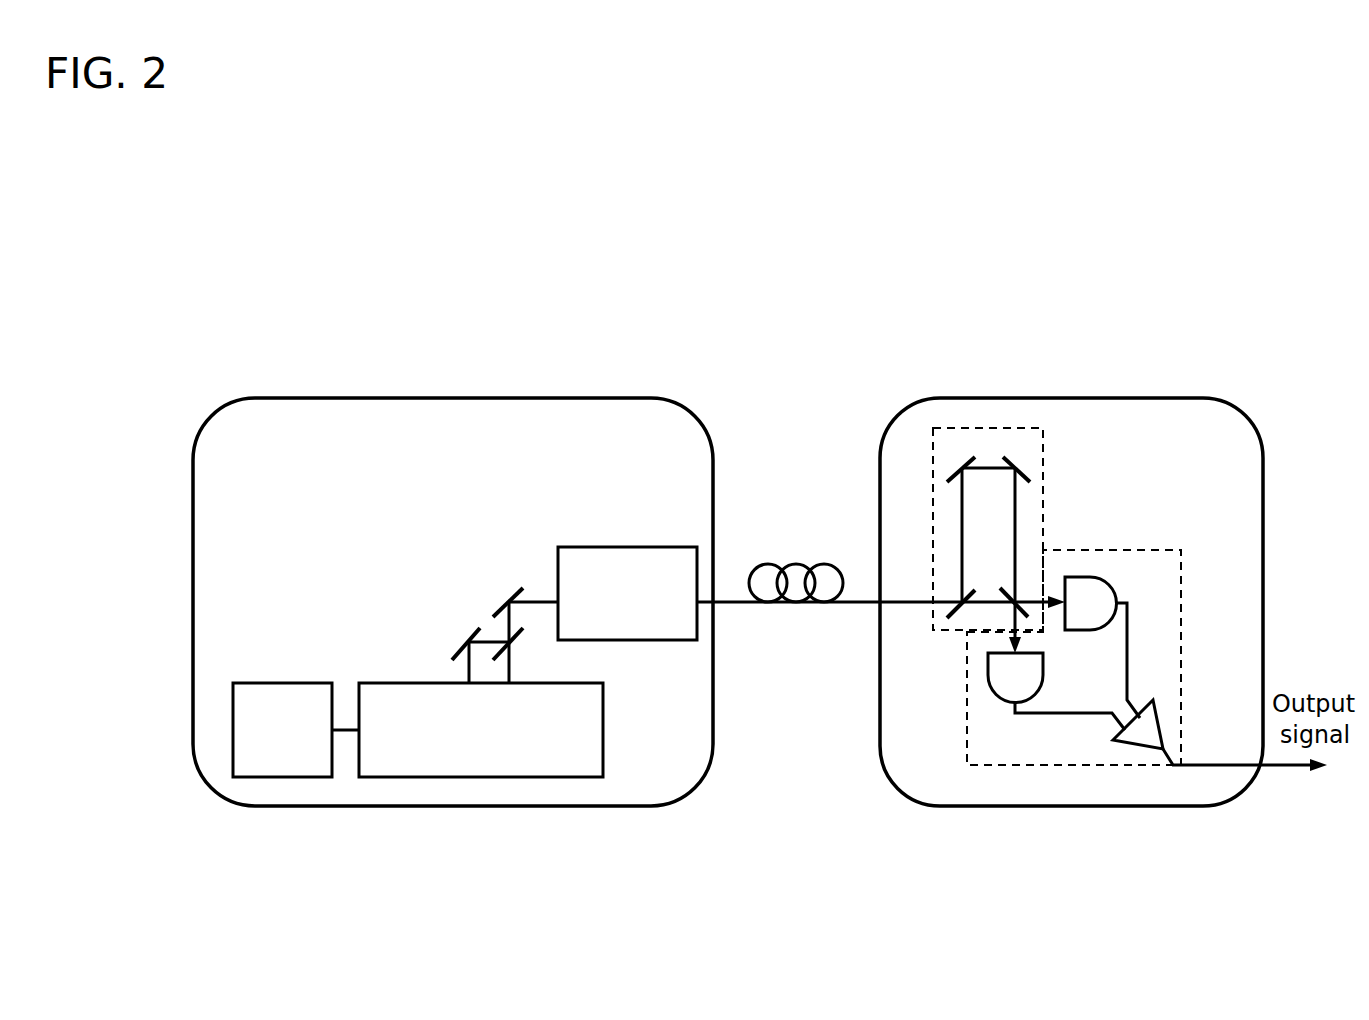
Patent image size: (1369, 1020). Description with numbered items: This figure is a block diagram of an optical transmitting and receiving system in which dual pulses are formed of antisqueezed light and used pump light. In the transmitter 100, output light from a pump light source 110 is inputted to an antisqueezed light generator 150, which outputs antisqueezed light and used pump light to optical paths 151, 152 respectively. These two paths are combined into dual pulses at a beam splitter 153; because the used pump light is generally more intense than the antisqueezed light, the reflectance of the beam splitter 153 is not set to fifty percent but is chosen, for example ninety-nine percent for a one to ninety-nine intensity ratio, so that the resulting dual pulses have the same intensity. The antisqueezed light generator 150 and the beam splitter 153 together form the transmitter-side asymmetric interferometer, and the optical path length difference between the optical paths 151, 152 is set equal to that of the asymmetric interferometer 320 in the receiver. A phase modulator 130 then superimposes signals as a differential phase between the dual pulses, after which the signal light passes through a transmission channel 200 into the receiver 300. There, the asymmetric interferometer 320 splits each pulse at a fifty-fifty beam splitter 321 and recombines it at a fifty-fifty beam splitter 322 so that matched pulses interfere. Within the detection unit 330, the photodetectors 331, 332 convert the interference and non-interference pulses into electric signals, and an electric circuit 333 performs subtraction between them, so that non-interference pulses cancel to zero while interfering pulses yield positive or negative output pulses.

The transmitter 100 is at (549, 398).
The pump light source 110 is at (273, 683).
The phase modulator 130 is at (635, 547).
The antisqueezed light generator 150 is at (603, 742).
The optical path 151 is at (459, 669).
The optical path 152 is at (511, 670).
The beam splitter 153 is at (502, 637).
The transmission channel 200 is at (770, 563).
The receiver 300 is at (1159, 398).
The asymmetric interferometer 320 is at (1043, 495).
The beam splitter 321 is at (955, 610).
The beam splitter 322 is at (1010, 598).
The detection unit 330 is at (1181, 620).
The photodetector 331 is at (1112, 577).
The photodetector 332 is at (988, 668).
The electric circuit 333 is at (1160, 722).